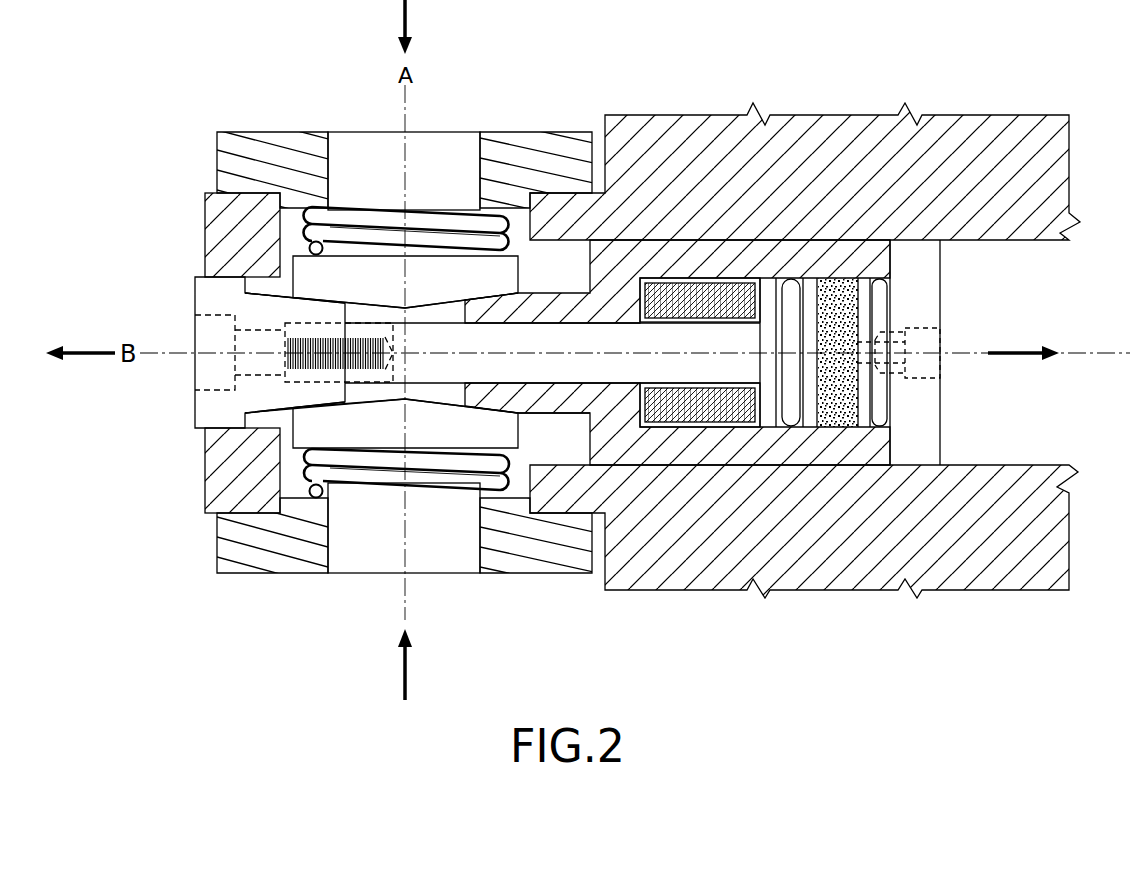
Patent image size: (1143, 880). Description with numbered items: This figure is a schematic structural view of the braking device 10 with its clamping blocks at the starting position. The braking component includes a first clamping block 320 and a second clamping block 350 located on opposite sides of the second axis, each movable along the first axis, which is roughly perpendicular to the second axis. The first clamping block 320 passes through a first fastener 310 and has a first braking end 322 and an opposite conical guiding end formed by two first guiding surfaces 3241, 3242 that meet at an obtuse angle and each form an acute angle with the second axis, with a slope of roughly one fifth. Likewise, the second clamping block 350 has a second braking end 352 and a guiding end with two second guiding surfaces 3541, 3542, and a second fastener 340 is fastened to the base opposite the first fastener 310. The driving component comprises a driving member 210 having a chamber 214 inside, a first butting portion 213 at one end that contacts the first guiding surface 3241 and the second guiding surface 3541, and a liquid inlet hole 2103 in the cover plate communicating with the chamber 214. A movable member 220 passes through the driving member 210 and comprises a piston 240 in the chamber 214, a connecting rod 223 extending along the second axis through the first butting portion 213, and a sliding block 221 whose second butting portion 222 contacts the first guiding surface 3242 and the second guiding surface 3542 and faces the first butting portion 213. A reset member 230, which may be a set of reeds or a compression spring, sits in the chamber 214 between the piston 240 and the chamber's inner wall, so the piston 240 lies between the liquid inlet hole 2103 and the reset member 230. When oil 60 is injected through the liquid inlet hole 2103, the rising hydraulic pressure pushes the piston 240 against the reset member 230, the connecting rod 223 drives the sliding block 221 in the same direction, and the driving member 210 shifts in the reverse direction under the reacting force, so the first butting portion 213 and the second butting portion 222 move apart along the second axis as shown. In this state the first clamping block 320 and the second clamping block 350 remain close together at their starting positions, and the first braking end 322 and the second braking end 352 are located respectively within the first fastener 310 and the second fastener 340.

The braking device 10 is at (162, 172).
The driving member 210 is at (952, 268).
The liquid inlet hole 2103 is at (918, 343).
The first butting portion 213 is at (548, 401).
The chamber 214 is at (862, 397).
The movable member 220 is at (554, 345).
The sliding block 221 is at (207, 416).
The second butting portion 222 is at (332, 403).
The connecting rod 223 is at (576, 338).
The reset member 230 is at (662, 385).
The piston 240 is at (768, 335).
The oil 60 is at (868, 300).
The first fastener 310 is at (530, 132).
The first clamping block 320 is at (455, 132).
The first braking end 322 is at (370, 132).
The first guiding surface 3241 is at (447, 310).
The first guiding surface 3242 is at (357, 304).
The second fastener 340 is at (530, 574).
The second clamping block 350 is at (455, 574).
The second braking end 352 is at (368, 574).
The second guiding surface 3541 is at (447, 397).
The second guiding surface 3542 is at (357, 401).